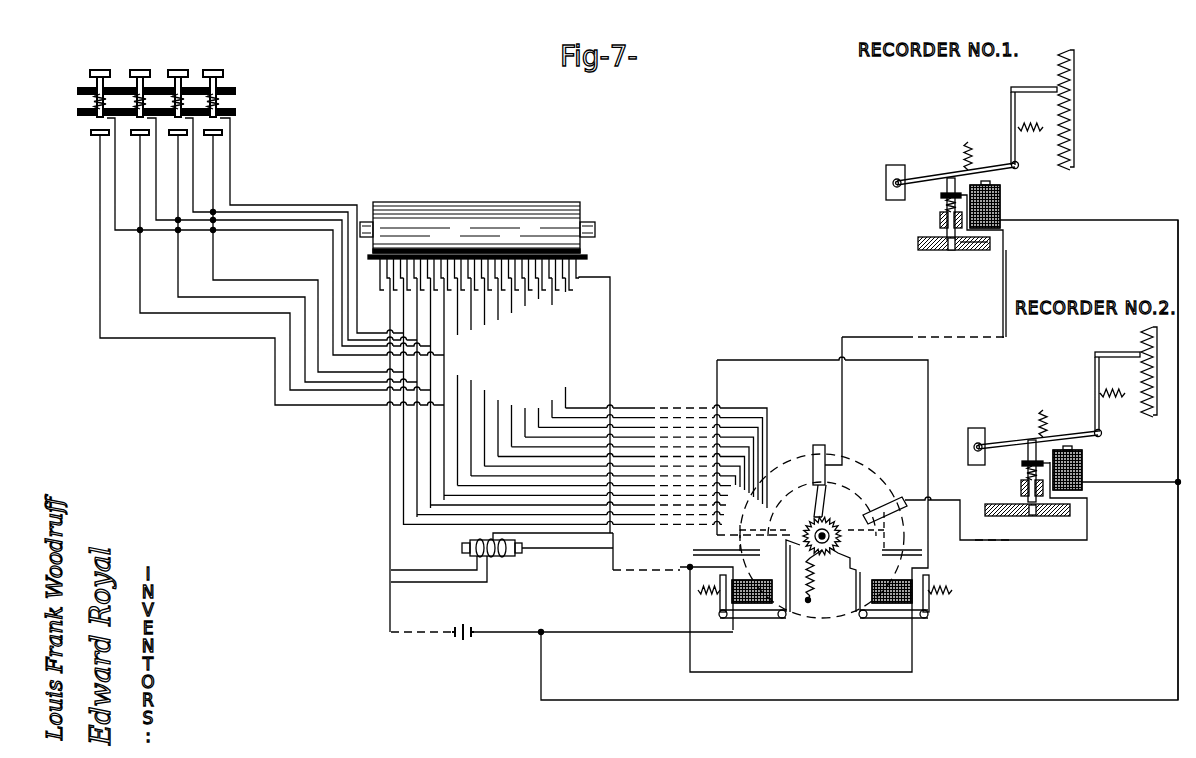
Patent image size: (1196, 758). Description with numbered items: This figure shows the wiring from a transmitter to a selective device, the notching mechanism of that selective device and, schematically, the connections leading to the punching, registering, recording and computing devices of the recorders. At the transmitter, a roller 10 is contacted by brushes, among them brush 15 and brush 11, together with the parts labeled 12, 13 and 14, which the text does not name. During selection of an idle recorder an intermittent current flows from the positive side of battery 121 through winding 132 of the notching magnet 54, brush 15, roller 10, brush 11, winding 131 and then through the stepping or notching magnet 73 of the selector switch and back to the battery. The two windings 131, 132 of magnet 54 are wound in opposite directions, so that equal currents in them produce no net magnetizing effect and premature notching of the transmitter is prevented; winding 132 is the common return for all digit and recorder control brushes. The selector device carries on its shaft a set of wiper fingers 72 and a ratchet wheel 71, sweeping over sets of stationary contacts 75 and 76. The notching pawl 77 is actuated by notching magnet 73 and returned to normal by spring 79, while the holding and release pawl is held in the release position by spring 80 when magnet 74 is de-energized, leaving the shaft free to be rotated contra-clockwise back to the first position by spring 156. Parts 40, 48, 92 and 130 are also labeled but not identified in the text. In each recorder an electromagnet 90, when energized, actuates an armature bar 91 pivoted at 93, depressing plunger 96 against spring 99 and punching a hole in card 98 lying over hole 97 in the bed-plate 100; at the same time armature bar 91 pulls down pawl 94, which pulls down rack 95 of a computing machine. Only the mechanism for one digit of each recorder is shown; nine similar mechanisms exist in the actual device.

The roller 10 is at (505, 203).
The brush 11 is at (581, 289).
The brush 12 is at (553, 305).
The brush 13 is at (428, 290).
The brush 14 is at (401, 292).
The brush 15 is at (386, 296).
The spring 40 is at (826, 555).
The armature arm 48 is at (787, 600).
The notching magnet 54 is at (523, 549).
The ratchet wheel 71 is at (828, 520).
The wiper fingers 72 is at (816, 497).
The notching magnet 73 is at (888, 584).
The magnet 74 is at (748, 584).
The stationary contacts 75 is at (819, 445).
The stationary contacts 76 is at (888, 505).
The notching pawl 77 is at (842, 556).
The spring 79 is at (942, 597).
The spring 80 is at (708, 598).
The electromagnet 90 is at (1001, 205).
The armature bar 91 is at (1012, 163).
The spring 92 is at (963, 159).
The pivot 93 is at (886, 184).
The pawl 94 is at (1038, 88).
The rack 95 is at (1072, 114).
The plunger 96 is at (945, 190).
The hole 97 is at (952, 250).
The card 98 is at (918, 240).
The spring 99 is at (946, 204).
The bed-plate 100 is at (977, 255).
The battery 121 is at (466, 643).
The conductor 130 is at (1178, 600).
The winding 131 is at (505, 557).
The winding 132 is at (477, 575).
The spring 156 is at (810, 600).